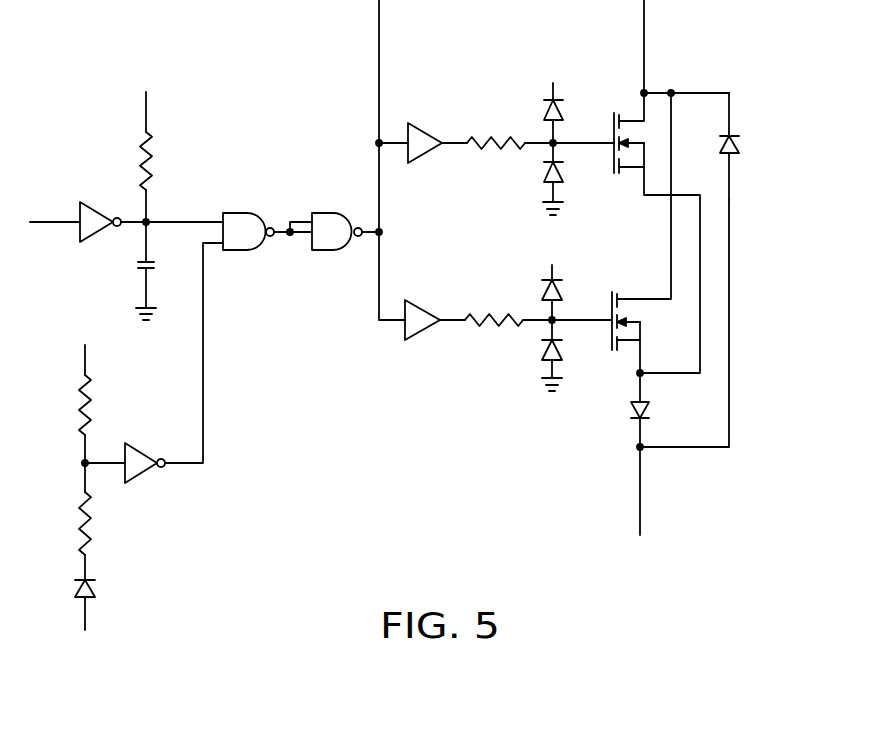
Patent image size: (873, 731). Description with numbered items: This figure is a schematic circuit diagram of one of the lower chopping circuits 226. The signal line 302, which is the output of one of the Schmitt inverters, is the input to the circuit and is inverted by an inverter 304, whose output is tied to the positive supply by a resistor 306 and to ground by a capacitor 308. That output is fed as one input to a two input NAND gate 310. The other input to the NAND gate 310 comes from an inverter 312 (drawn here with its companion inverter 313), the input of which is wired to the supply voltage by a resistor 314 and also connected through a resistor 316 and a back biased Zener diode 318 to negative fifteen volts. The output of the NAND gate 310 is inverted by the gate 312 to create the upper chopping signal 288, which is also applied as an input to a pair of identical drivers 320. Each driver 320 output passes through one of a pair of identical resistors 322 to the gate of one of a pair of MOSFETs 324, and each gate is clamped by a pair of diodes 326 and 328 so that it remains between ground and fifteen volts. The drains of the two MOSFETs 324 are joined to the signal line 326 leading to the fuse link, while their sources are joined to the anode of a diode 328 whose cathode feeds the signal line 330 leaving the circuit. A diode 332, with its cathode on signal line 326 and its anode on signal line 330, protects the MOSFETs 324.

The lower chopping circuit 226 is at (733, 311).
The upper chopping signal 288 is at (383, 43).
The signal line 302 is at (64, 226).
The inverter 304 is at (84, 201).
The resistor 306 is at (150, 181).
The capacitor 308 is at (138, 266).
The two input NAND gate 310 is at (259, 241).
The inverter 312 is at (348, 241).
The inverter 313 is at (138, 448).
The resistor 314 is at (95, 401).
The resistor 316 is at (75, 515).
The back biased Zener diode 318 is at (93, 596).
The drivers 320 is at (423, 157).
The resistors 322 is at (480, 132).
The MOSFETs 324 is at (612, 171).
The diode / signal line 326 is at (543, 113).
The diode 328 is at (543, 176).
The signal line 330 is at (638, 493).
The diode 332 is at (740, 143).